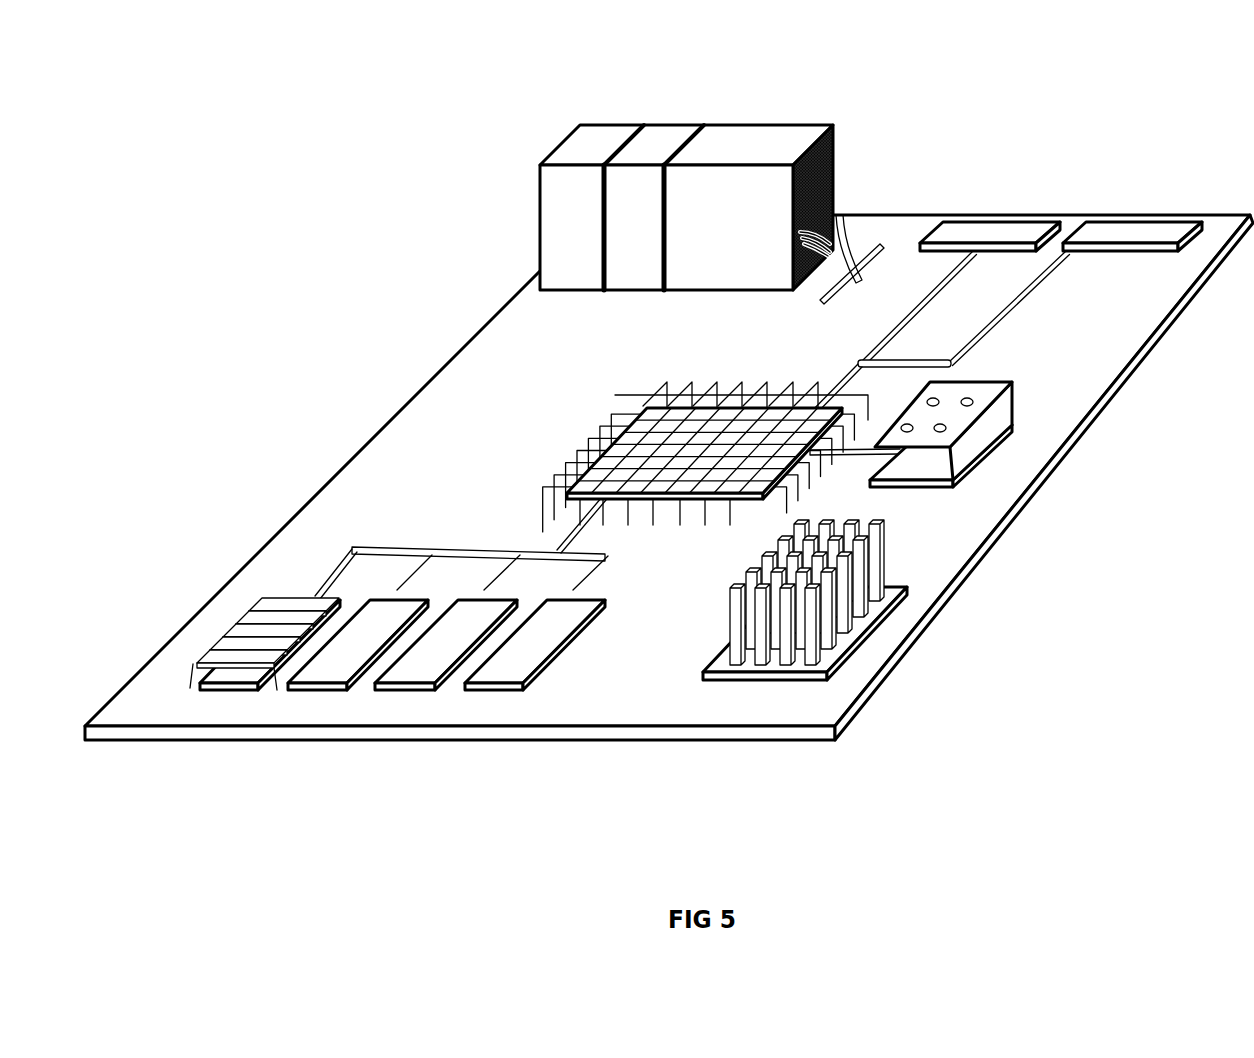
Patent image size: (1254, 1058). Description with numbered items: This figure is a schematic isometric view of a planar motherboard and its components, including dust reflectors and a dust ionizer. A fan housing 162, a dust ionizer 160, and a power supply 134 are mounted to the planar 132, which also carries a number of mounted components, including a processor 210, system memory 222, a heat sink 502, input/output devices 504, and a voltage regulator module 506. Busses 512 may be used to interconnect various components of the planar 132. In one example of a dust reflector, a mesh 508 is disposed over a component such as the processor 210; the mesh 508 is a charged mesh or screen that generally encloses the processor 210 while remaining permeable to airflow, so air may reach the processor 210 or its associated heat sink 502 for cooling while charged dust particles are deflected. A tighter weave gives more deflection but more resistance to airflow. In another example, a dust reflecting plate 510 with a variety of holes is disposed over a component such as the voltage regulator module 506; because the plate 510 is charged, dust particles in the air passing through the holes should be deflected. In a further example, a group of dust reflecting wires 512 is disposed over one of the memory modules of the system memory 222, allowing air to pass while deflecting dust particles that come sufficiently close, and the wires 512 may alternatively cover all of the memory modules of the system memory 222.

The planar 132 is at (675, 188).
The power supply 134 is at (743, 138).
The dust ionizer 160 is at (655, 137).
The fan housing 162 is at (592, 137).
The processor 210 is at (550, 480).
The system memory 222 is at (232, 665).
The heat sink 502 is at (886, 653).
The input/output (I/O) devices 504 is at (1112, 227).
The voltage regulator module (VRM) 506 is at (945, 472).
The mesh 508 is at (560, 402).
The dust reflecting plate 510 is at (958, 420).
The dust reflecting wires 512 is at (1015, 307).